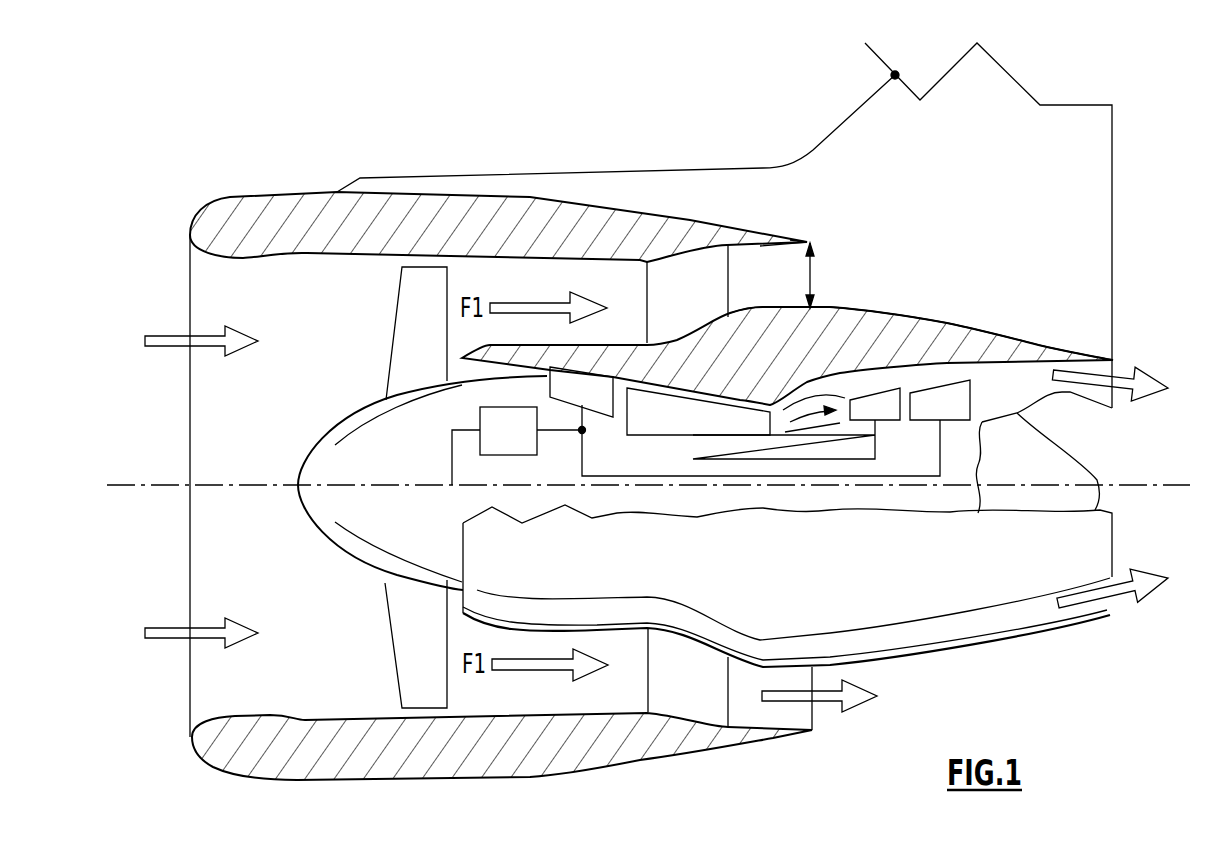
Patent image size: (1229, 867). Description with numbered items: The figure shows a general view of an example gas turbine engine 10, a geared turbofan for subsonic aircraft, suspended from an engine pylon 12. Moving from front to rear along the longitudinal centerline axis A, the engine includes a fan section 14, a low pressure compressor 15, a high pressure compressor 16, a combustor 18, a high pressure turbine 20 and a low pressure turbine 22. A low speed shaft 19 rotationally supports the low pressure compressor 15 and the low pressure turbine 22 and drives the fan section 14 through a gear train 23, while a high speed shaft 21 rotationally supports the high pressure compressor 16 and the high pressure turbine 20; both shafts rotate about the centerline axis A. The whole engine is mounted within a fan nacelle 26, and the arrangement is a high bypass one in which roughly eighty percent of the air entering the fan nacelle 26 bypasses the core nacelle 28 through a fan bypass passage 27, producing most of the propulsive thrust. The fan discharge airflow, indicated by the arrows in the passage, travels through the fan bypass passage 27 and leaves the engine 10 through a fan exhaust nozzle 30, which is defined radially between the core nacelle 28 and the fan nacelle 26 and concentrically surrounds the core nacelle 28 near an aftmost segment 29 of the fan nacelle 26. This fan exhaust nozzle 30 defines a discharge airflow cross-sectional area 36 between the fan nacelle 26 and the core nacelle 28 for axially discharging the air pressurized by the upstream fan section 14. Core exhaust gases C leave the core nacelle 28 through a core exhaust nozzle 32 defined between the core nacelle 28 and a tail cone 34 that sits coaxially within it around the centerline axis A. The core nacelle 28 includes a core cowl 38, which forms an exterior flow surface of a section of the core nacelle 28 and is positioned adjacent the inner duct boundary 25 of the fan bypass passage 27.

The gas turbine engine 10 is at (253, 182).
The engine pylon 12 is at (985, 77).
The fan section 14 is at (403, 608).
The low pressure compressor 15 is at (573, 407).
The high pressure compressor 16 is at (638, 437).
The combustor 18 is at (815, 432).
The low speed shaft 19 is at (687, 477).
The high pressure turbine 20 is at (892, 421).
The high speed shaft 21 is at (745, 461).
The low pressure turbine 22 is at (957, 421).
The gear train 23 is at (521, 445).
The inner duct boundary 25 is at (622, 341).
The fan nacelle 26 is at (467, 208).
The fan bypass passage 27 is at (690, 290).
The core nacelle 28 is at (990, 348).
The aftmost segment 29 is at (823, 243).
The fan exhaust nozzle 30 is at (797, 238).
The core exhaust nozzle 32 is at (1113, 360).
The tail cone 34 is at (1067, 470).
The discharge airflow cross-sectional area 36 is at (812, 277).
The core cowl 38 is at (770, 308).
The longitudinal centerline axis A is at (1187, 488).
The core exhaust gases C is at (1092, 608).